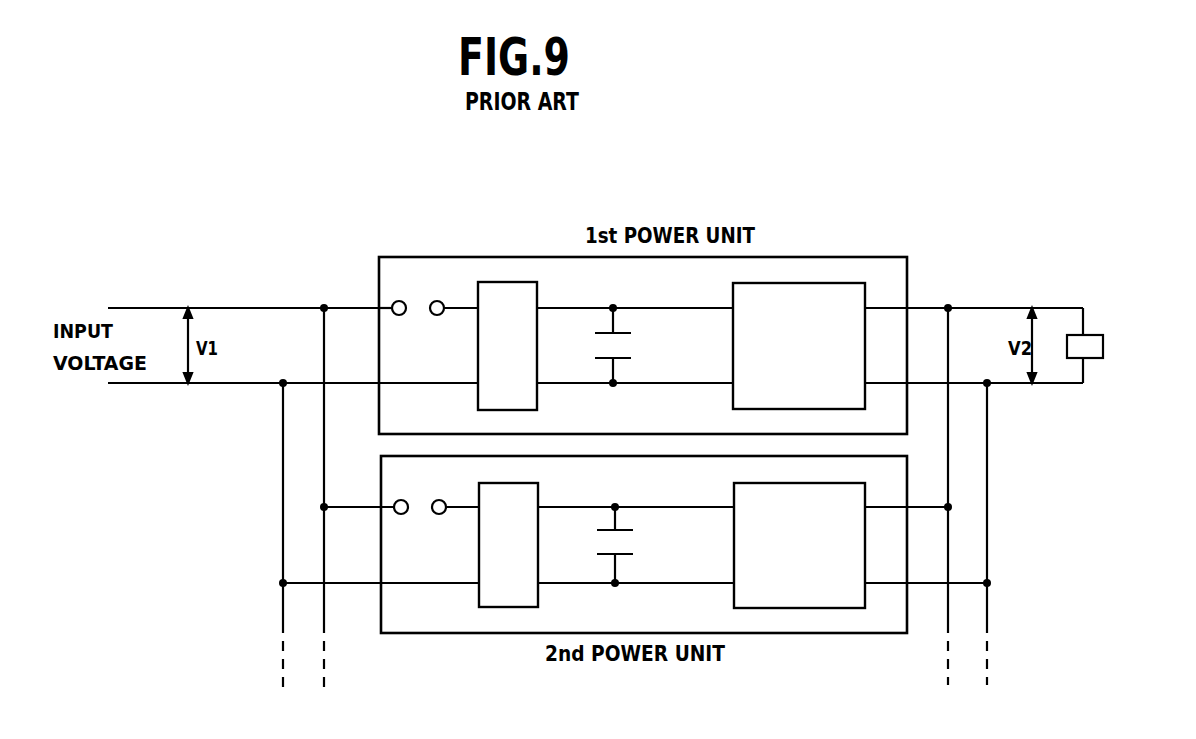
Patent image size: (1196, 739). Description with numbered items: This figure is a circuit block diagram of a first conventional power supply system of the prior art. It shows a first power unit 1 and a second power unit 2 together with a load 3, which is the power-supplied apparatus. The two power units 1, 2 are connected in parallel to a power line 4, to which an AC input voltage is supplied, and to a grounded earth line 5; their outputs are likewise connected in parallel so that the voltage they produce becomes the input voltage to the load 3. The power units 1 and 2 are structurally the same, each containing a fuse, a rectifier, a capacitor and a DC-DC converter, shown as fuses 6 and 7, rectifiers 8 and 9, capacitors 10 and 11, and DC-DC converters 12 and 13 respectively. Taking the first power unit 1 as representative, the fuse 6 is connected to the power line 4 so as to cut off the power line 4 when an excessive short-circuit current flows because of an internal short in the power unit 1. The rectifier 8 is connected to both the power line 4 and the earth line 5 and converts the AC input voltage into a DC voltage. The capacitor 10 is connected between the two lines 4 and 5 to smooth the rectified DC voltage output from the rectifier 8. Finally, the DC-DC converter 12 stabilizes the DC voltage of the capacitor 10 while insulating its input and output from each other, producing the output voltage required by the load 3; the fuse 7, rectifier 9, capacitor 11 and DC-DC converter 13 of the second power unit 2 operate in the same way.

The first power unit 1 is at (893, 257).
The second power unit 2 is at (868, 634).
The load 3 is at (1097, 358).
The power line 4 is at (242, 305).
The earth line 5 is at (222, 386).
The fuse 6 is at (420, 309).
The fuse 7 is at (425, 508).
The rectifier 8 is at (499, 282).
The rectifier 9 is at (488, 608).
The capacitor 10 is at (622, 345).
The capacitor 11 is at (625, 551).
The DC-DC converter 12 is at (835, 283).
The DC-DC converter 13 is at (827, 609).